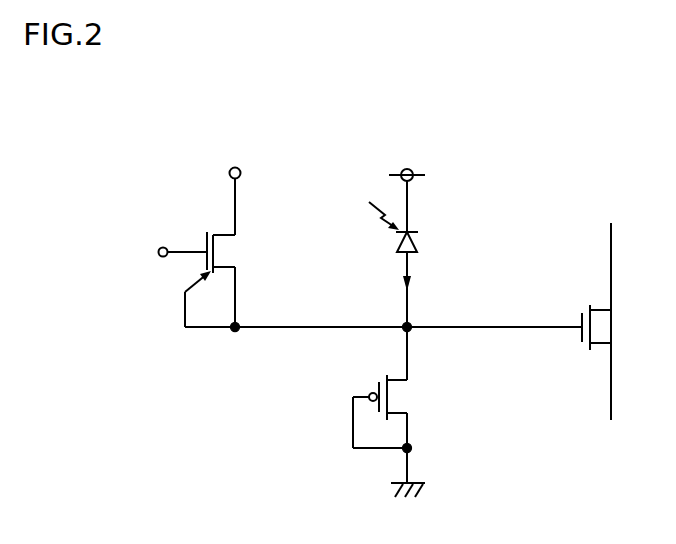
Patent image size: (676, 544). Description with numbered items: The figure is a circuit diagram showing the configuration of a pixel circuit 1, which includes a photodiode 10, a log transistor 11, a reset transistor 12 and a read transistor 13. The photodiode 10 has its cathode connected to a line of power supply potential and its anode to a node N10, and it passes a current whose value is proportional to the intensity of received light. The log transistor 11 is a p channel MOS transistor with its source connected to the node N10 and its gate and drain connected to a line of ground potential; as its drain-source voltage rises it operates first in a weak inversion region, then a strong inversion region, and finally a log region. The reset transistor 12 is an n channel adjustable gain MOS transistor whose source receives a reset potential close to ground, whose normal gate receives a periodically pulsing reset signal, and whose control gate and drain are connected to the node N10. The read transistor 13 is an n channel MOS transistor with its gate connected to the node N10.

The pixel circuit 1 is at (133, 107).
The photodiode 10 is at (419, 244).
The log transistor 11 is at (402, 378).
The reset transistor 12 is at (228, 232).
The read transistor 13 is at (605, 308).
The node N10 is at (410, 331).